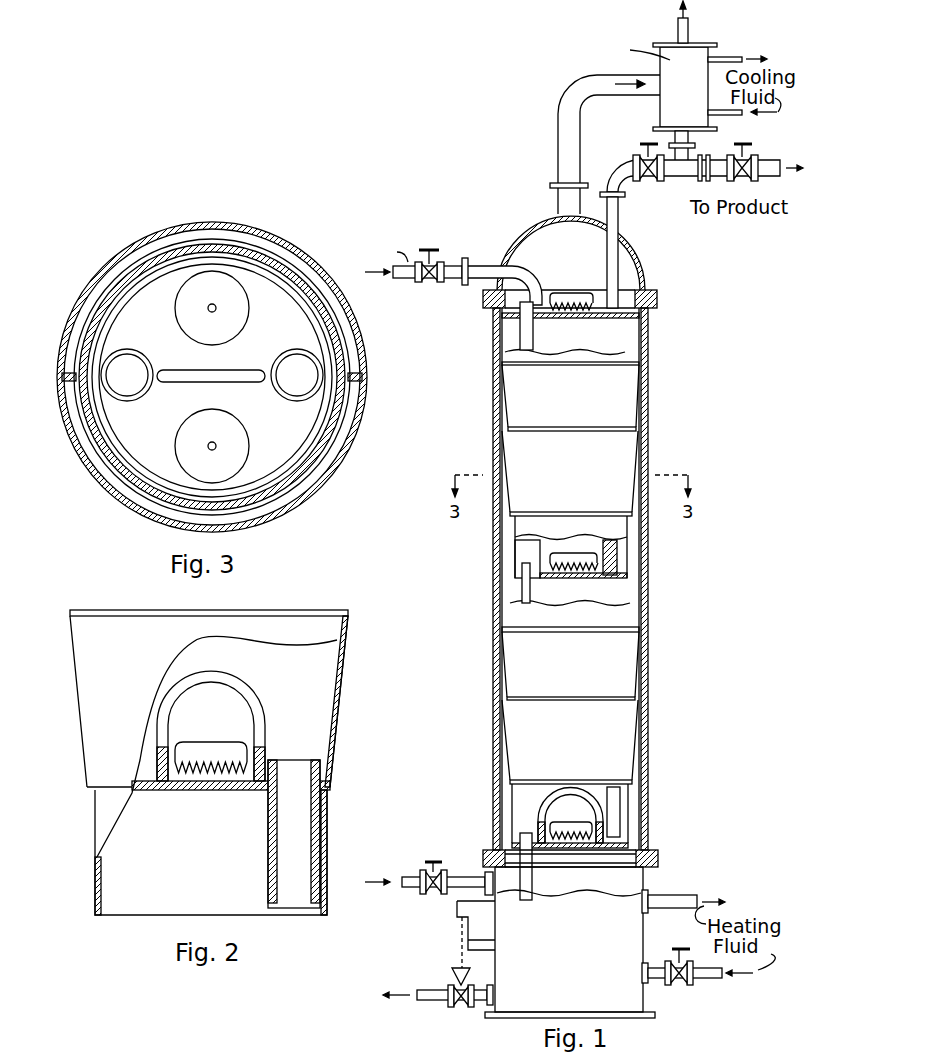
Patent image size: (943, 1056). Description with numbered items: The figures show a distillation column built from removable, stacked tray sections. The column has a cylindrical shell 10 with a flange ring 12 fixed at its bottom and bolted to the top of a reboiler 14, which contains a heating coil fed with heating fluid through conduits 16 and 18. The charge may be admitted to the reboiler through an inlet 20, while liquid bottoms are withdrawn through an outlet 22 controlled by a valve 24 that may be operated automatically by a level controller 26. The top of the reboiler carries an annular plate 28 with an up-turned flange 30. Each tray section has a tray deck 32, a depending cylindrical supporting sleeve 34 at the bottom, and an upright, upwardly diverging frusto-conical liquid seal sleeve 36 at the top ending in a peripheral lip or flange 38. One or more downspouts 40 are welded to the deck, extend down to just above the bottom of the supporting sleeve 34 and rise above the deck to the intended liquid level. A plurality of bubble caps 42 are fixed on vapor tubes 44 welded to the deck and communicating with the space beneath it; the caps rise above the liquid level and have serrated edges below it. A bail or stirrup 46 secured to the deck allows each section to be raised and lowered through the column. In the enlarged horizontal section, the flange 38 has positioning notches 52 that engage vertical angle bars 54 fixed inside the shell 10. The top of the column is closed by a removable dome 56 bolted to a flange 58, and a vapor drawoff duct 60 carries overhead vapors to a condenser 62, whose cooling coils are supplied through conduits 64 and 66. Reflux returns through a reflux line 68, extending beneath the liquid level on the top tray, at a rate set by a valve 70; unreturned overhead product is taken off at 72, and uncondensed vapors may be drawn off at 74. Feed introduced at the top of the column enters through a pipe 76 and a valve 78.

In FIG. 1, the cylindrical shell 10 is at (647, 654).
In FIG. 3, the cylindrical shell 10 is at (258, 228).
In FIG. 1, the flange ring 12 is at (648, 852).
In FIG. 1, the reboiler 14 is at (638, 997).
In FIG. 1, the conduit 16 is at (653, 967).
In FIG. 1, the conduit 18 is at (658, 896).
In FIG. 1, the inlet 20 is at (413, 890).
In FIG. 1, the outlet 22 is at (433, 1002).
In FIG. 1, the valve 24 is at (470, 1007).
In FIG. 1, the level controller 26 is at (457, 914).
In FIG. 1, the annular plate 28 is at (624, 866).
In FIG. 1, the up-turned flange 30 is at (618, 857).
In FIG. 2, the tray deck 32 is at (143, 789).
In FIG. 1, the supporting sleeve 34 is at (570, 560).
In FIG. 3, the supporting sleeve 34 is at (105, 342).
In FIG. 2, the supporting sleeve 34 is at (323, 816).
In FIG. 1, the liquid seal sleeve 36 is at (647, 578).
In FIG. 3, the liquid seal sleeve 36 is at (103, 300).
In FIG. 2, the liquid seal sleeve 36 is at (338, 676).
In FIG. 3, the peripheral lip or flange 38 is at (80, 334).
In FIG. 2, the peripheral lip or flange 38 is at (348, 618).
In FIG. 1, the downspout 40 is at (532, 880).
In FIG. 3, the downspout 40 is at (119, 402).
In FIG. 2, the downspout 40 is at (268, 830).
In FIG. 3, the bubble cap 42 is at (247, 309).
In FIG. 2, the bubble cap 42 is at (197, 752).
In FIG. 2, the vapor tube 44 is at (211, 782).
In FIG. 3, the bail or stirrup 46 is at (224, 371).
In FIG. 2, the bail or stirrup 46 is at (258, 708).
In FIG. 3, the positioning notch 52 is at (362, 391).
In FIG. 2, the positioning notch 52 is at (127, 610).
In FIG. 1, the vertical angle bar 54 is at (493, 403).
In FIG. 3, the vertical angle bar 54 is at (65, 381).
In FIG. 1, the removable dome 56 is at (633, 250).
In FIG. 1, the flange 58 is at (657, 305).
In FIG. 1, the vapor drawoff duct 60 is at (558, 153).
In FIG. 1, the condenser 62 is at (620, 84).
In FIG. 1, the conduit 64 is at (722, 116).
In FIG. 1, the conduit 66 is at (722, 60).
In FIG. 1, the reflux line 68 is at (619, 233).
In FIG. 1, the valve 70 is at (634, 160).
In FIG. 1, the product takeoff 72 is at (757, 162).
In FIG. 1, the vapor drawoff 74 is at (678, 30).
In FIG. 1, the pipe 76 is at (512, 268).
In FIG. 1, the valve 78 is at (430, 284).